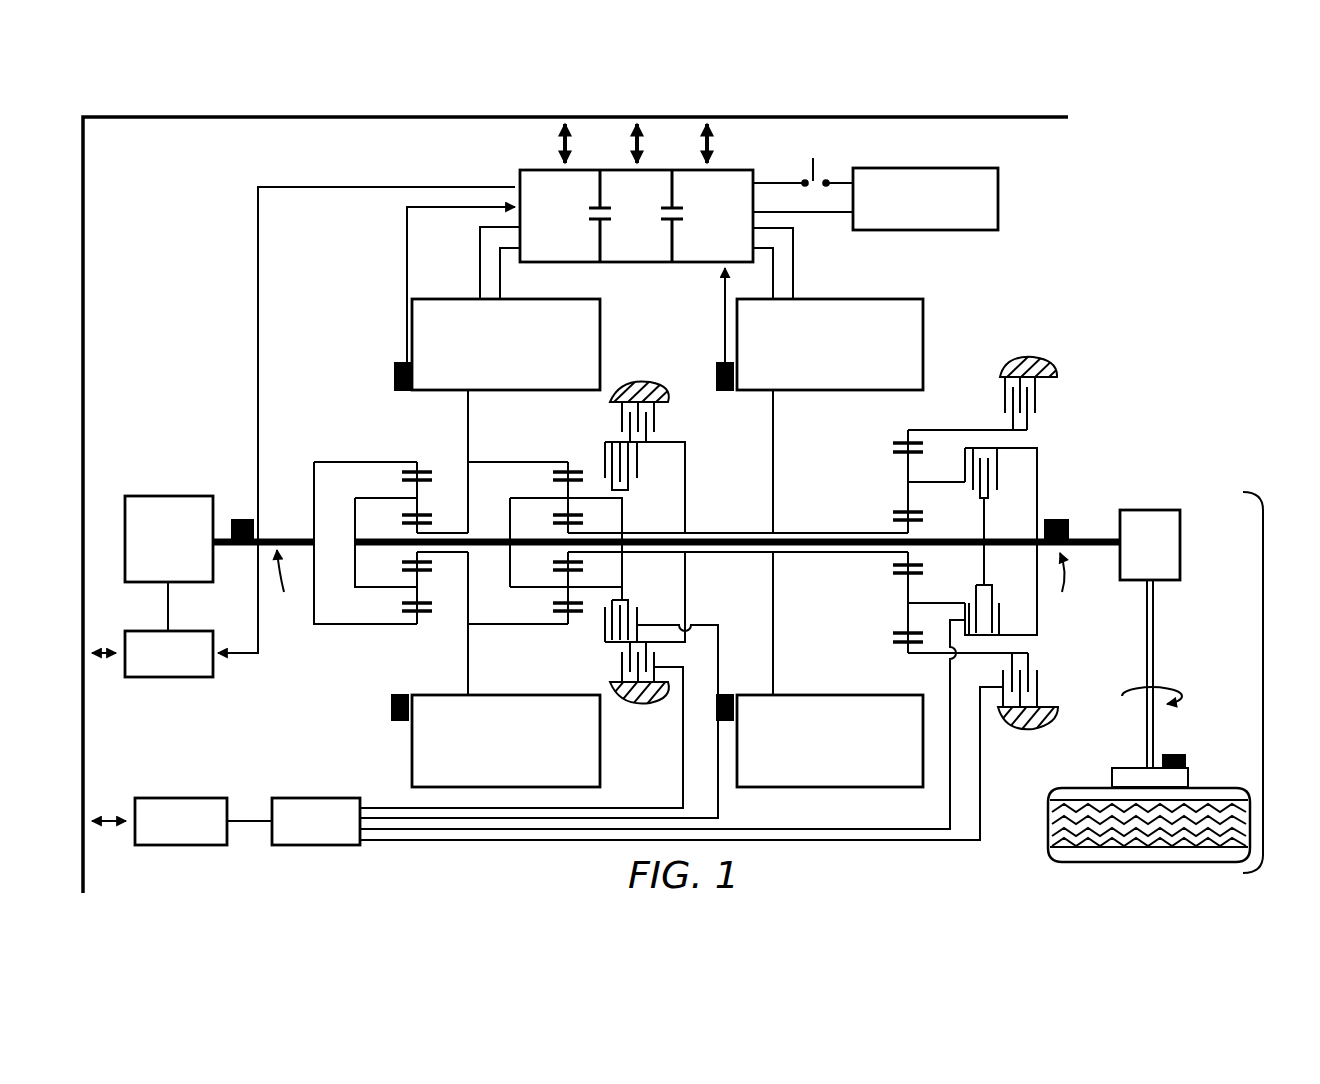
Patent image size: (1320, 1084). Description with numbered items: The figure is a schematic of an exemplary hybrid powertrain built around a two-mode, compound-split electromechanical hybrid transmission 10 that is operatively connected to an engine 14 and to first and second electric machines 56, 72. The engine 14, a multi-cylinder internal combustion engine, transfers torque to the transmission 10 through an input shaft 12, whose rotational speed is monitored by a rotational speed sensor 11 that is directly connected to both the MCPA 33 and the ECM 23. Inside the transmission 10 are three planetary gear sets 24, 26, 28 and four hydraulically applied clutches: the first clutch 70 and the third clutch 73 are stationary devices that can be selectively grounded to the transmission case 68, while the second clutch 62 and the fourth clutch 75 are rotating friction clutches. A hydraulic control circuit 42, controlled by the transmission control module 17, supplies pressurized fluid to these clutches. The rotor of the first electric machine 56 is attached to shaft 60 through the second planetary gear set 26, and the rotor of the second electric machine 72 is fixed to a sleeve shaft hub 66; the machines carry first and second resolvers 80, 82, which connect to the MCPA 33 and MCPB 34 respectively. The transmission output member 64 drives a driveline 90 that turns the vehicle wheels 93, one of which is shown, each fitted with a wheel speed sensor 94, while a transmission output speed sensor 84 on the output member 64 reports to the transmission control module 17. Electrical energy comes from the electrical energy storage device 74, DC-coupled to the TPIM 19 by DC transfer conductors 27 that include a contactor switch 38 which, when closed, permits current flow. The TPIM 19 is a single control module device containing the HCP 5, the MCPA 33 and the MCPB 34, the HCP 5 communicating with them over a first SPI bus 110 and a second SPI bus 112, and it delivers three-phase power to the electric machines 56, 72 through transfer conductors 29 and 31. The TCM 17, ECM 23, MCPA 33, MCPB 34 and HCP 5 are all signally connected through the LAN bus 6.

The LAN bus 6 is at (272, 119).
The electromechanical hybrid transmission 10 is at (372, 256).
The TPIM 19 is at (545, 168).
The MCPA 33 is at (557, 209).
The HCP 5 is at (637, 214).
The MCPB 34 is at (712, 204).
The first SPI bus 110 is at (606, 206).
The second SPI bus 112 is at (678, 206).
The DC transfer conductors 27 is at (757, 183).
The contactor switch 38 is at (816, 163).
The electrical energy storage device 74 is at (998, 188).
The transfer conductors 29 is at (480, 275).
The transfer conductors 31 is at (793, 258).
The first electric machine 56 is at (412, 332).
The second electric machine 72 is at (923, 313).
The first resolver 80 is at (395, 377).
The second resolver 82 is at (725, 392).
The input shaft 12 is at (289, 538).
The rotational speed sensor 11 is at (243, 518).
The engine 14 is at (175, 496).
The ECM 23 is at (215, 670).
The transmission control module 17 is at (170, 798).
The hydraulic control circuit 42 is at (292, 798).
The first planetary gear set 24 is at (407, 452).
The second planetary gear set 26 is at (561, 452).
The third planetary gear set 28 is at (900, 426).
The sleeve shaft hub 66 is at (807, 533).
The shaft 60 is at (957, 538).
The transmission case 68 is at (645, 386).
The clutch C3 73 is at (662, 426).
The clutch C4 75 is at (647, 475).
The clutch C1 70 is at (998, 396).
The clutch C2 62 is at (1008, 488).
The transmission output speed sensor 84 is at (1060, 519).
The output member 64 is at (1092, 535).
The vehicle wheel 93 is at (1112, 778).
The wheel speed sensor 94 is at (1175, 755).
The driveline 90 is at (1263, 677).